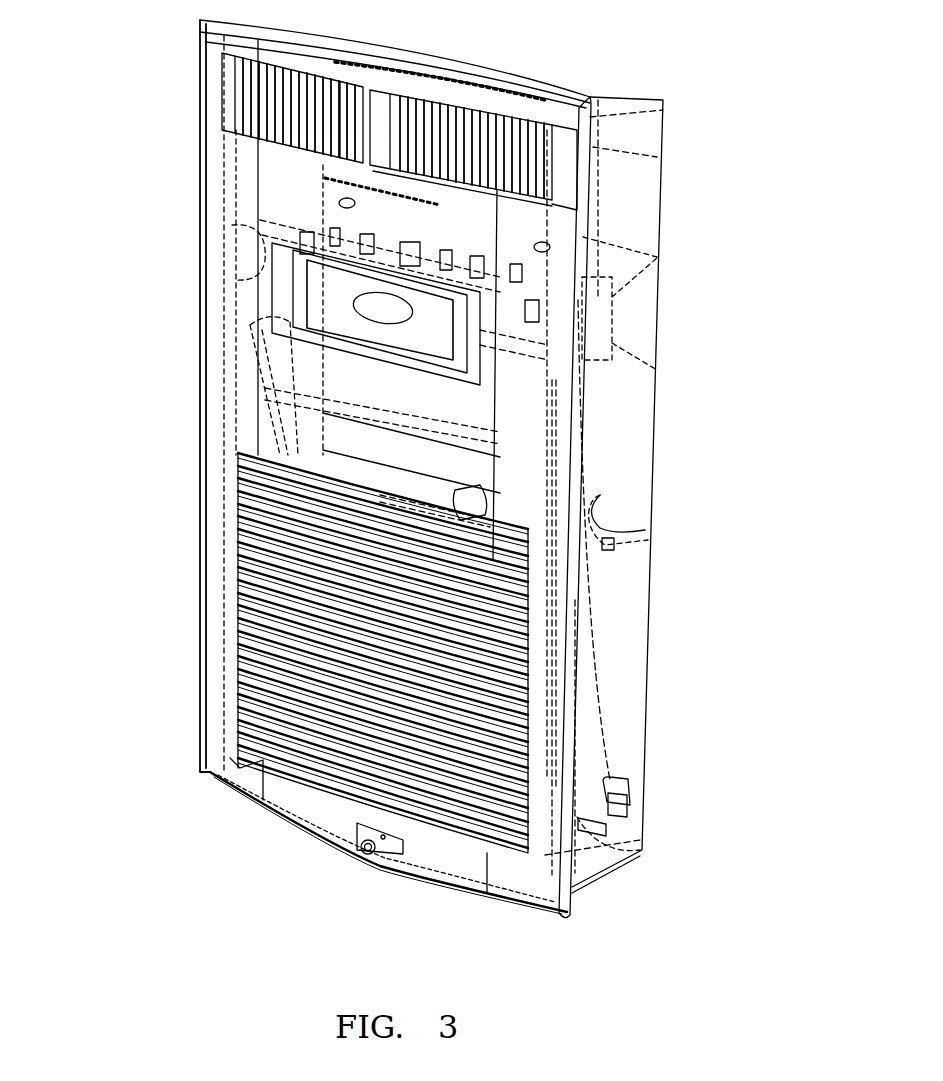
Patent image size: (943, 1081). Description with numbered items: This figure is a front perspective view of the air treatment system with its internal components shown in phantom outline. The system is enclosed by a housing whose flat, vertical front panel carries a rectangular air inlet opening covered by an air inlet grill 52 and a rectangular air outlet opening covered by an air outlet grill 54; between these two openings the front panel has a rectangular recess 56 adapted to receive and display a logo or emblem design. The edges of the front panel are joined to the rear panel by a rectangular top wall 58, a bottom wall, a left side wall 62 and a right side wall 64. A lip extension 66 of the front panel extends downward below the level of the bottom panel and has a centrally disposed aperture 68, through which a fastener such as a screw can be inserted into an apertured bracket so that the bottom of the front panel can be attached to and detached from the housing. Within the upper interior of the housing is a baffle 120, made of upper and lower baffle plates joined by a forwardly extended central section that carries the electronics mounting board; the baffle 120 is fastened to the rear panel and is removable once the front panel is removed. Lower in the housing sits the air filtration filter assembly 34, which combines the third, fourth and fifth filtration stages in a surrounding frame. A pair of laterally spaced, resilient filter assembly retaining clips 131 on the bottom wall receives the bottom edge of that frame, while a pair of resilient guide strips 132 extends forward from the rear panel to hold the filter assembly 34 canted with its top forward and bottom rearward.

The air filtration filter assembly 34 is at (595, 722).
The air inlet grill 52 is at (240, 597).
The air outlet grill 54 is at (275, 113).
The rectangular recess 56 is at (337, 307).
The top wall 58 is at (618, 103).
The left side wall 62 is at (203, 408).
The right side wall 64 is at (633, 619).
The lip extension 66 is at (310, 817).
The aperture 68 is at (360, 853).
The baffle 120 is at (647, 315).
The filter assembly retaining clips 131 is at (607, 821).
The guide strips 132 is at (280, 397).